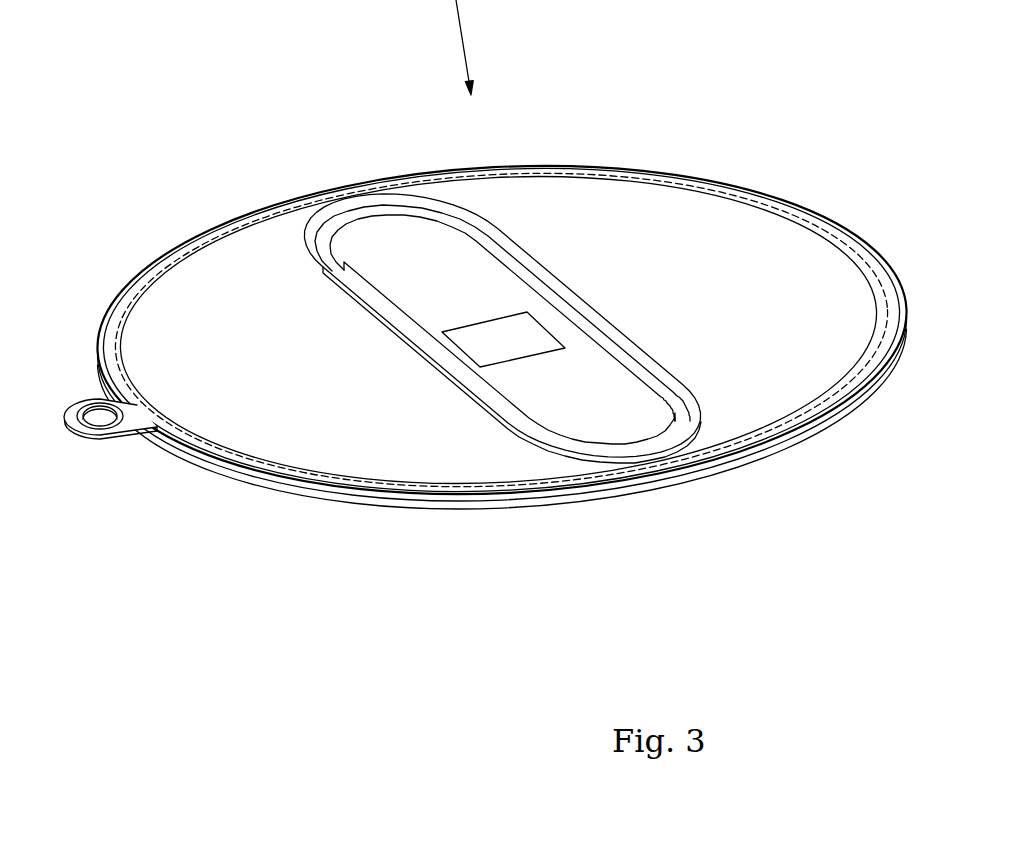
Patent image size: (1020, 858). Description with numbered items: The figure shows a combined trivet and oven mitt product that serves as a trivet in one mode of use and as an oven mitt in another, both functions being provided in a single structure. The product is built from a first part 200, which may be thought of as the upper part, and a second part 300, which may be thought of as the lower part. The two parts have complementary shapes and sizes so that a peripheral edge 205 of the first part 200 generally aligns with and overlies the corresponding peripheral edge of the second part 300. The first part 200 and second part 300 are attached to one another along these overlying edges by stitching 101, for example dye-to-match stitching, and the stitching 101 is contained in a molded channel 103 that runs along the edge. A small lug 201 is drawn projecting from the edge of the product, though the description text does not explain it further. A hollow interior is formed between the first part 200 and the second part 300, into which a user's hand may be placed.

The stitching 101 is at (512, 488).
The molded channel 103 is at (288, 478).
The first part 200 is at (382, 410).
The hanging lug 201 is at (117, 437).
The peripheral edge 205 is at (220, 225).
The second part 300 is at (608, 375).